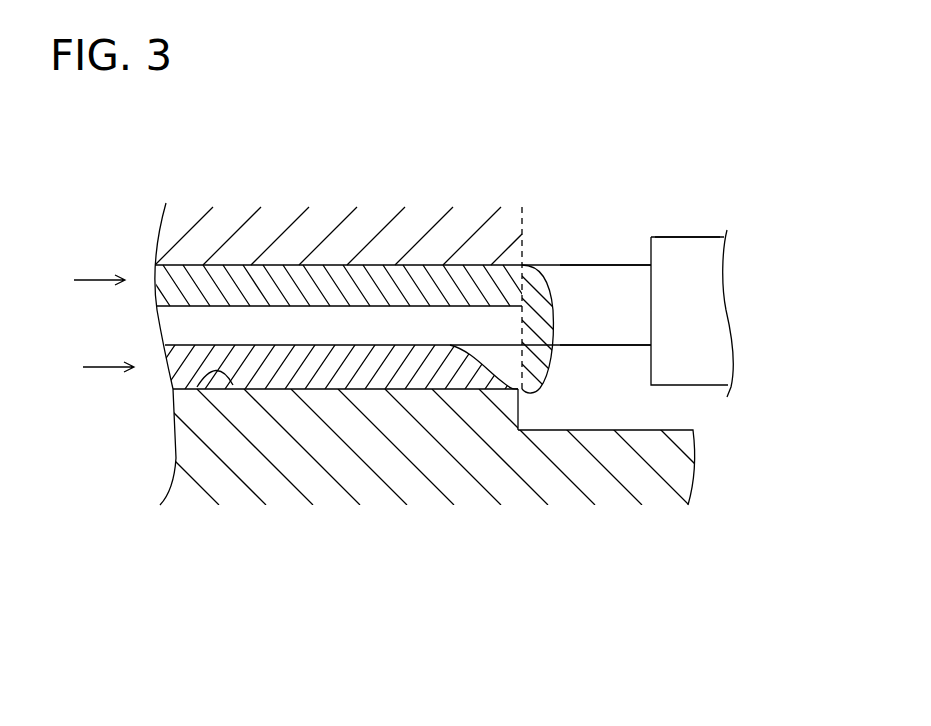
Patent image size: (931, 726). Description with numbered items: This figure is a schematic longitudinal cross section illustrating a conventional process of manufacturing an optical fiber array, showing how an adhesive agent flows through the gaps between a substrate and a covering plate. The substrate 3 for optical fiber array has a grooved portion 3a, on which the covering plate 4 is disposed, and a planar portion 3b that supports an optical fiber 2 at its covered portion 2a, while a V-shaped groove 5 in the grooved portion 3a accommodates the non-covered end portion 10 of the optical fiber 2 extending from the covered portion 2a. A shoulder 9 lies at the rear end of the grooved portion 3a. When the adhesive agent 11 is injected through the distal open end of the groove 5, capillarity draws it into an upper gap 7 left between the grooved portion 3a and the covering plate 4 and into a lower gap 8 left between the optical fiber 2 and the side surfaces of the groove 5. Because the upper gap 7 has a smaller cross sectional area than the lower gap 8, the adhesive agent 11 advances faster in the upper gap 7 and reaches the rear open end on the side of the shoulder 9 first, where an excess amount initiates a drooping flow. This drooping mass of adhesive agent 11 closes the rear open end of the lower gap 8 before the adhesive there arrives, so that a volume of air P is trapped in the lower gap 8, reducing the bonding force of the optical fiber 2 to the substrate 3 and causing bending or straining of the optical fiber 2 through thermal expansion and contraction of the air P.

The optical fiber 2 is at (714, 222).
The covered portion 2a is at (680, 237).
The substrate for optical fiber array 3 is at (460, 586).
The grooved portion 3a is at (489, 405).
The planar portion 3b is at (597, 460).
The covering plate 4 is at (459, 228).
The V-shaped groove 5 is at (197, 387).
The gap 7 is at (258, 276).
The gap 8 is at (324, 353).
The shoulder 9 is at (520, 408).
The non-covered end portion 10 is at (600, 278).
The adhesive agent 11 is at (537, 357).
The air P is at (495, 362).